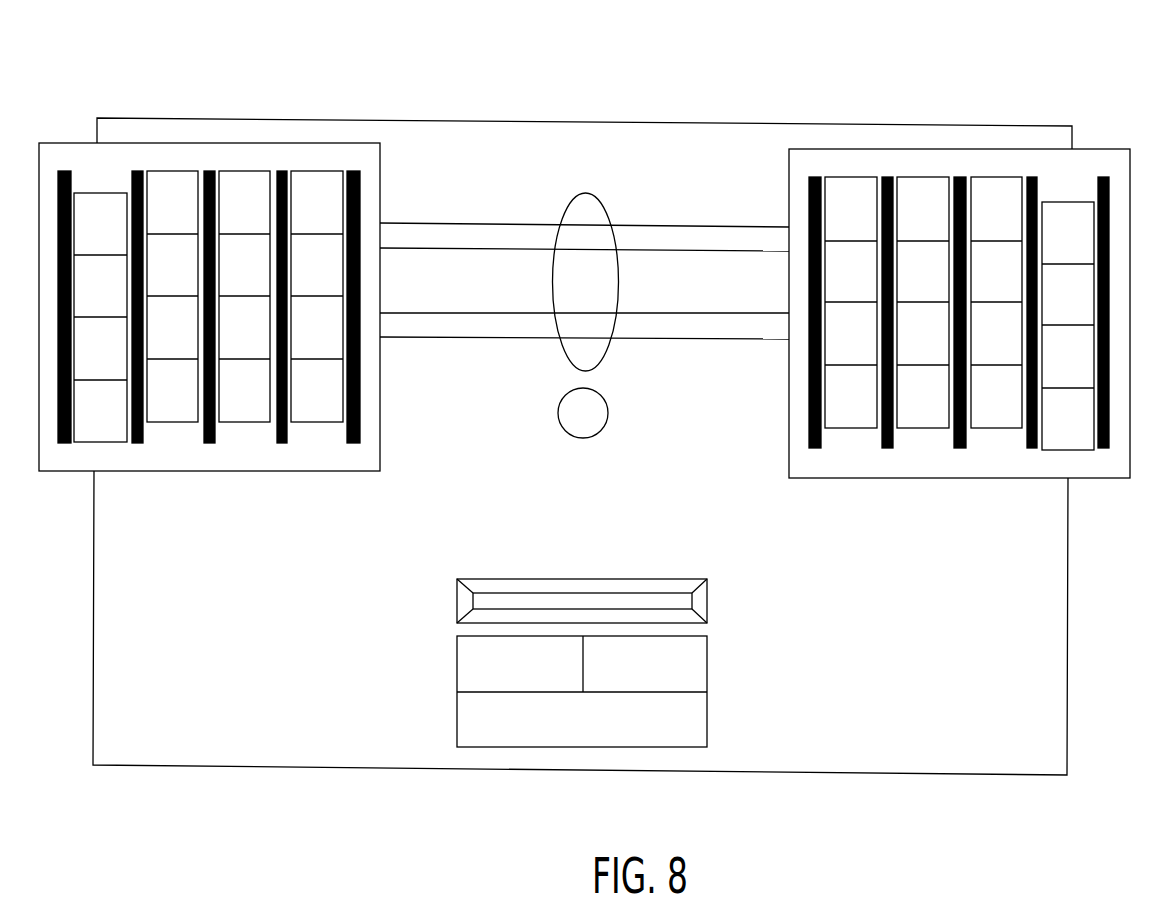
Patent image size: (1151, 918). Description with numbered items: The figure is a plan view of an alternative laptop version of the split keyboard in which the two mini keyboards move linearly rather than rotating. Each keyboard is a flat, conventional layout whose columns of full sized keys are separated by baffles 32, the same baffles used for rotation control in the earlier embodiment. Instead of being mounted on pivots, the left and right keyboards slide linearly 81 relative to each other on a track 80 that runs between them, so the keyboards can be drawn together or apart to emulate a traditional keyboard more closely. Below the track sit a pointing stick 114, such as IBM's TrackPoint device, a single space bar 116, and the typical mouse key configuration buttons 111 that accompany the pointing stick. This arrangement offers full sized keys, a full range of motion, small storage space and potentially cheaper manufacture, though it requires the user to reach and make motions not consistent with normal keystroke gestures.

The track 80 is at (587, 161).
The linear sliding motion 81 is at (328, 76).
The baffles 32 is at (341, 451).
The mouse key configuration buttons 111 is at (619, 671).
The pointing stick 114 is at (570, 427).
The space bar 116 is at (658, 612).